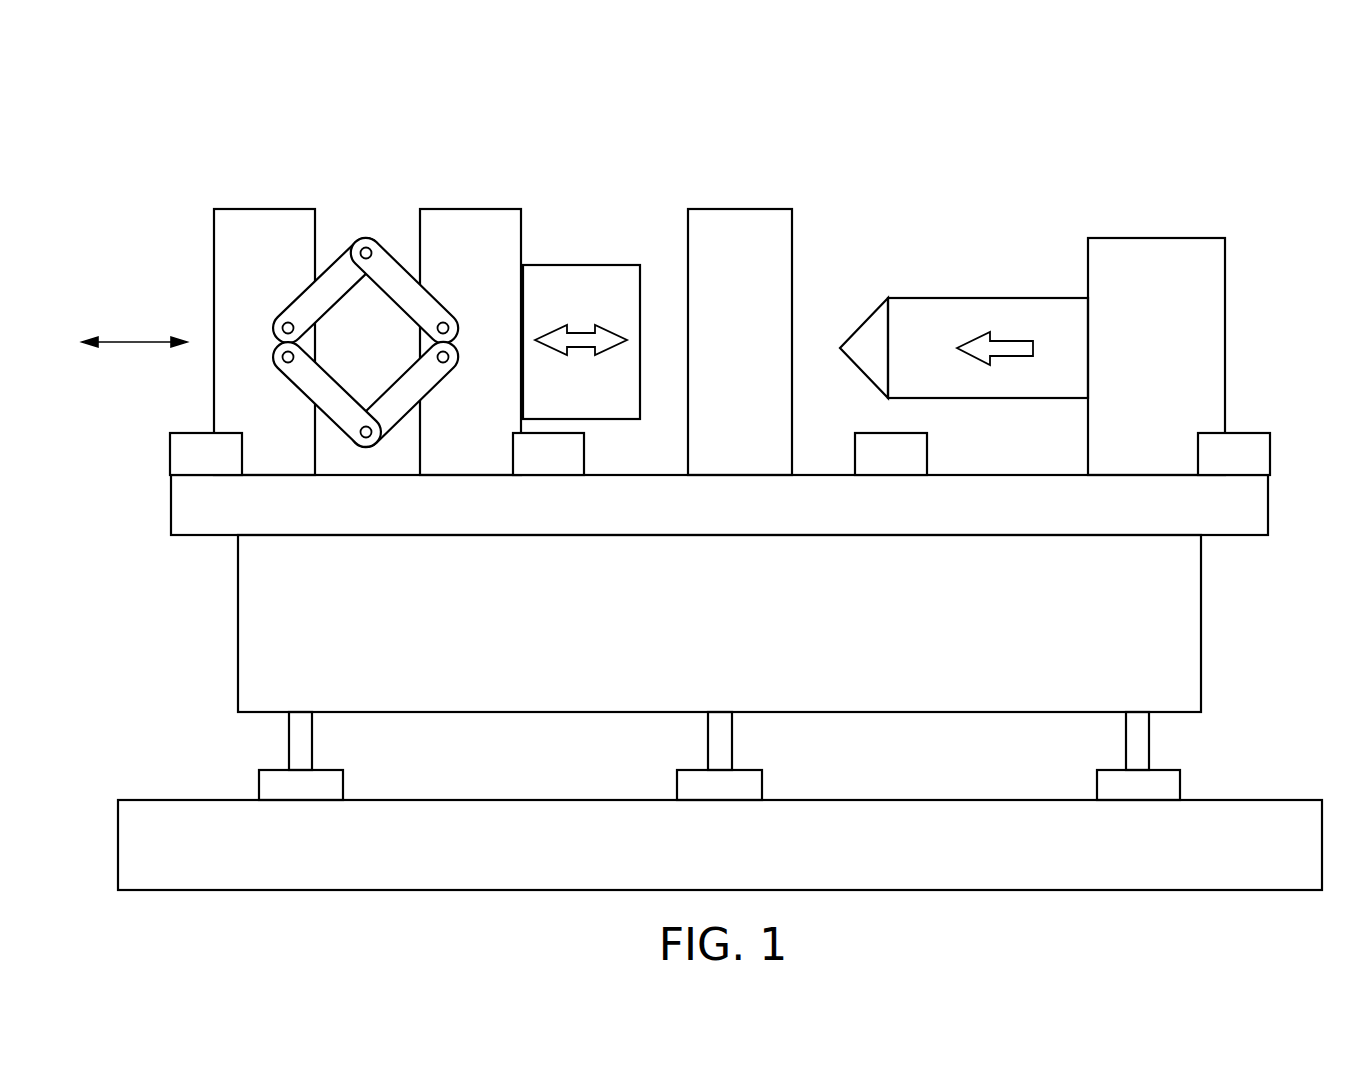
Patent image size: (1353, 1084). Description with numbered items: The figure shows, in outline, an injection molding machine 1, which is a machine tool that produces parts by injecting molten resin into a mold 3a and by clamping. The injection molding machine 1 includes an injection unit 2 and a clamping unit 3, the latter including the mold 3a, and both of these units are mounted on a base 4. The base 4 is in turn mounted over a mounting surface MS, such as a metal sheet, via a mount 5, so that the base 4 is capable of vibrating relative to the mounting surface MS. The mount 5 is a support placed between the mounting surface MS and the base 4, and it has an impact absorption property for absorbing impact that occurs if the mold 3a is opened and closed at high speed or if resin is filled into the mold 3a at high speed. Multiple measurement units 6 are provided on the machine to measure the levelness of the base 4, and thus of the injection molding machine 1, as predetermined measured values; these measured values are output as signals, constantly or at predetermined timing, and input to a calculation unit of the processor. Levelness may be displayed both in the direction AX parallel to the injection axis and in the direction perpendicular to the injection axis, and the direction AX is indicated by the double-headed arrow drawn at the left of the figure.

The injection molding machine 1 is at (703, 465).
The injection unit 2 is at (1184, 222).
The clamping unit 3 is at (488, 196).
The mold 3a is at (582, 265).
The base 4 is at (1202, 622).
The mount 5 is at (325, 770).
The measurement units 6 is at (170, 458).
The mounting surface MS is at (1273, 800).
The direction parallel to injection axis AX is at (134, 357).